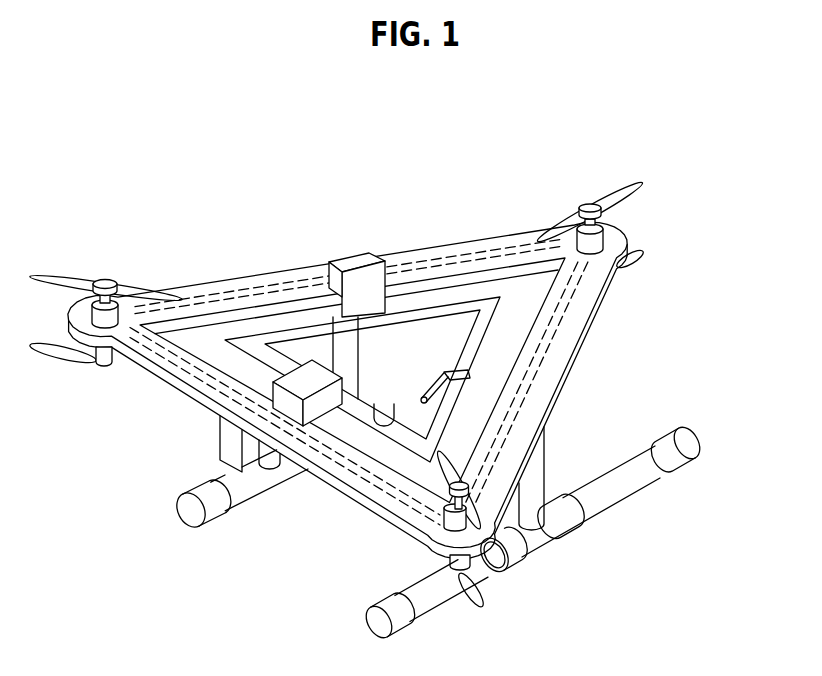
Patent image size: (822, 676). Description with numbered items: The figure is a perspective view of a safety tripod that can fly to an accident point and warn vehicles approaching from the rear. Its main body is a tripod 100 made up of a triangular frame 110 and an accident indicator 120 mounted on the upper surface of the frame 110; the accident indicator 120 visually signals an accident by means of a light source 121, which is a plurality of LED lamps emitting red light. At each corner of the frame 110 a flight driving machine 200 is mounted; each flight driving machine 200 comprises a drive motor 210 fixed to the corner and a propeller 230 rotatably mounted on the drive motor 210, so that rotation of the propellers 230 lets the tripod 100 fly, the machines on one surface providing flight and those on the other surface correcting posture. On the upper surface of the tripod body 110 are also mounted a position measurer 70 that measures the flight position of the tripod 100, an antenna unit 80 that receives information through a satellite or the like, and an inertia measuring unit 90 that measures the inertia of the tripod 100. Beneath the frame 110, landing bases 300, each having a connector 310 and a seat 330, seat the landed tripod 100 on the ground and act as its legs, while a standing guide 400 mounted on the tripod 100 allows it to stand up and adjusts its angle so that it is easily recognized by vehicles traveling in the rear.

The tripod 100 is at (416, 364).
The frame 110 is at (524, 304).
The accident indicator 120 is at (420, 342).
The light source 121 is at (440, 262).
The position measurer 70 is at (350, 263).
The antenna unit 80 is at (435, 397).
The inertia measuring unit 90 is at (296, 401).
The flight driving machine 200 is at (669, 178).
The drive motor 210 is at (612, 240).
The propeller 230 is at (639, 183).
The landing base 300 is at (574, 532).
The connector 310 is at (542, 478).
The seat 330 is at (640, 474).
The standing guide 400 is at (245, 486).